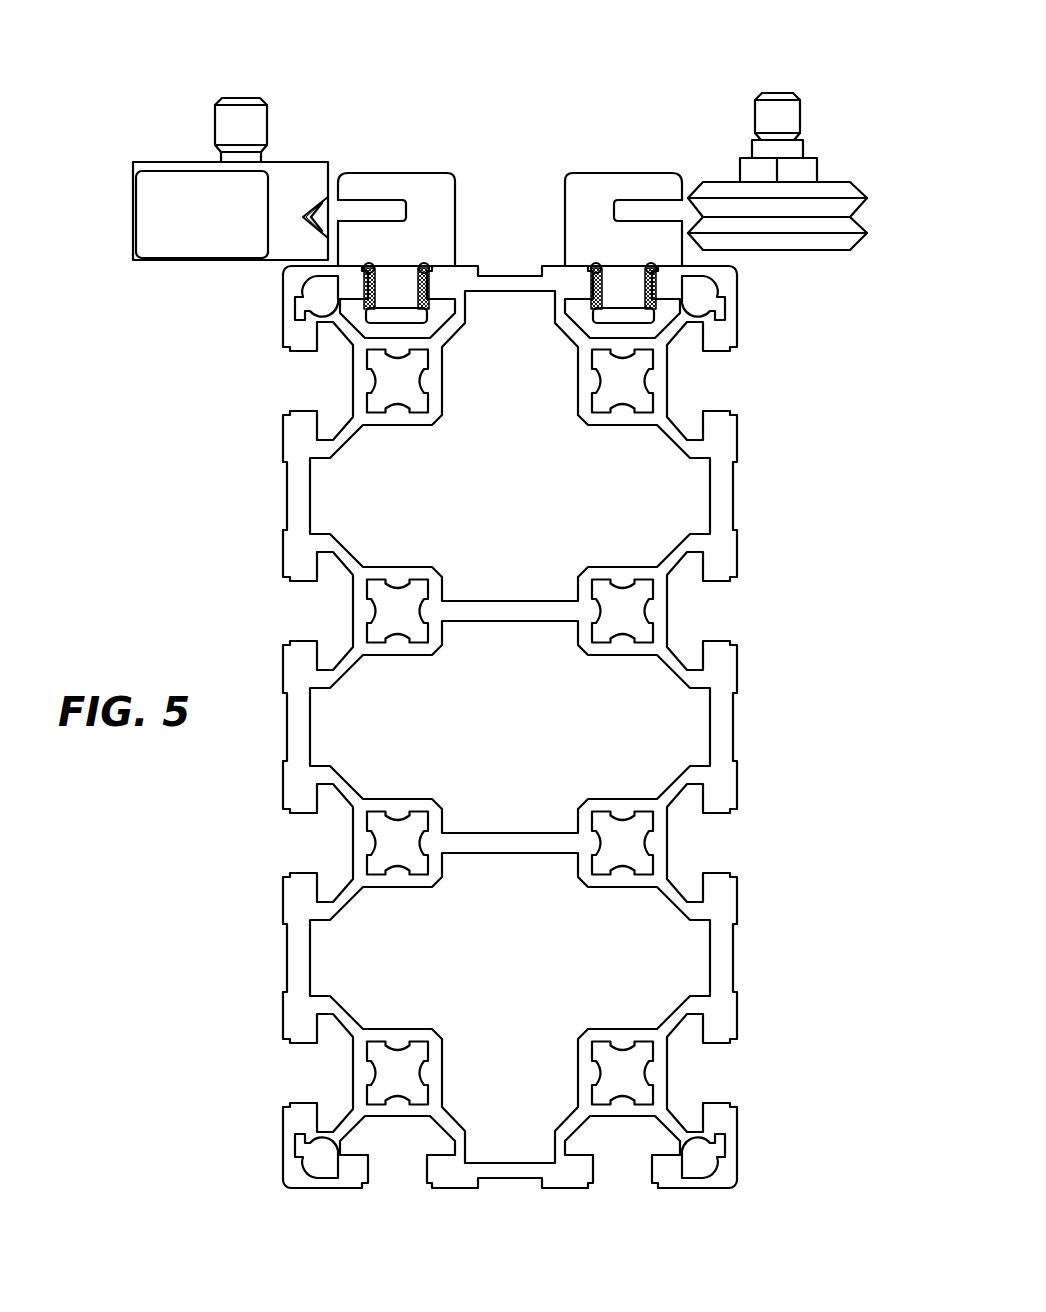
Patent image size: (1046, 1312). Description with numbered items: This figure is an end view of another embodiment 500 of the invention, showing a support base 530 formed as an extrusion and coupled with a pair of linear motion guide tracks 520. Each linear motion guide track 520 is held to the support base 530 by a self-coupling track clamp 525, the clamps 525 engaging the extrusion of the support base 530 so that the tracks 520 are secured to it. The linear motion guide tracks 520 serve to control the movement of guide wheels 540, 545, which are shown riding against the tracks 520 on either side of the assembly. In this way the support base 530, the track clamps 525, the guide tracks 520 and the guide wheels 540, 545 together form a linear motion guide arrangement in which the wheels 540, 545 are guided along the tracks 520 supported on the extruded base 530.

The embodiment 500 is at (163, 42).
The linear motion guide track 520 is at (335, 202).
The track clamp 525 is at (430, 185).
The support base 530 is at (739, 718).
The guide wheel 540 is at (133, 212).
The guide wheel 545 is at (868, 213).